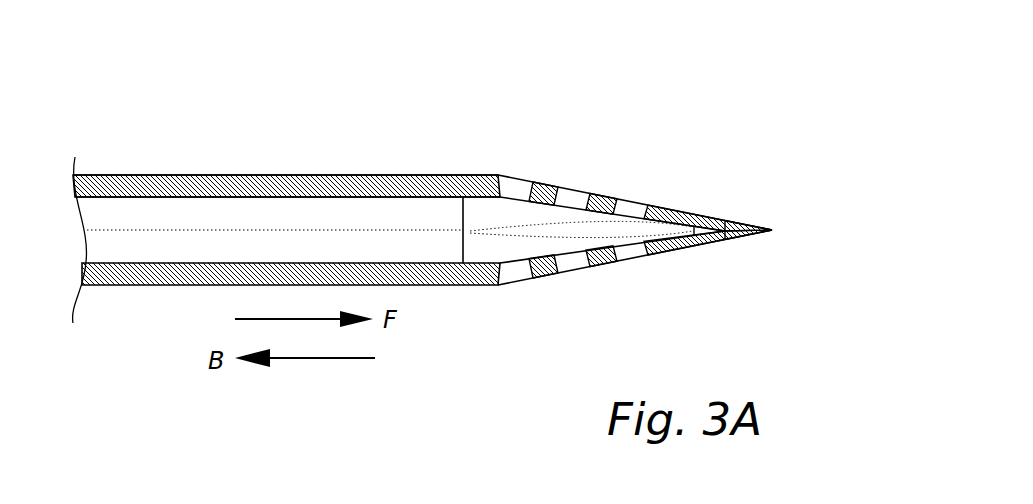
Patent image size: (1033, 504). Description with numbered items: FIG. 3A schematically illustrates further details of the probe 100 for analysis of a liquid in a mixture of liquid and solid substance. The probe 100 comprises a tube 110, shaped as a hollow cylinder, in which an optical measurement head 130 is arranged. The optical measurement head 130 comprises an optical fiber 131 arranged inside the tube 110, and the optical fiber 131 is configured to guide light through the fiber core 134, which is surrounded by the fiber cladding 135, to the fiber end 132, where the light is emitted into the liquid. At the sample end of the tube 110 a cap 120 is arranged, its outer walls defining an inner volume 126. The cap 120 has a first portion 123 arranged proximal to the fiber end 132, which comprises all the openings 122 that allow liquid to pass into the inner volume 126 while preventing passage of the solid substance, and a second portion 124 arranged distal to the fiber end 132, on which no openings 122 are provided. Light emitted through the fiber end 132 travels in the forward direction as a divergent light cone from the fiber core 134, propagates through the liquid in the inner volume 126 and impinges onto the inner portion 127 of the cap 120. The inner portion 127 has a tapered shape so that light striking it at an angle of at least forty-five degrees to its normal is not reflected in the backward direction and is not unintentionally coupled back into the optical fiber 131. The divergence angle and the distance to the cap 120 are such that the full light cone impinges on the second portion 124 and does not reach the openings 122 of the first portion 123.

The probe 100 is at (720, 72).
The tube 110 is at (103, 175).
The cap 120 is at (687, 247).
The openings 122 is at (662, 262).
The first portion 123 is at (660, 188).
The second portion 124 is at (775, 212).
The inner volume 126 is at (500, 215).
The inner portion 127 is at (730, 237).
The optical measurement head 130 is at (147, 242).
The optical fiber 131 is at (212, 175).
The fiber end 132 is at (463, 243).
The fiber core 134 is at (282, 232).
The fiber cladding 135 is at (365, 217).